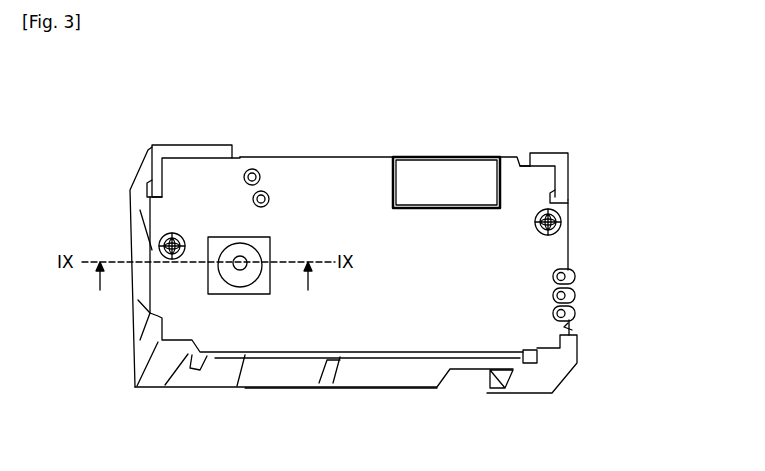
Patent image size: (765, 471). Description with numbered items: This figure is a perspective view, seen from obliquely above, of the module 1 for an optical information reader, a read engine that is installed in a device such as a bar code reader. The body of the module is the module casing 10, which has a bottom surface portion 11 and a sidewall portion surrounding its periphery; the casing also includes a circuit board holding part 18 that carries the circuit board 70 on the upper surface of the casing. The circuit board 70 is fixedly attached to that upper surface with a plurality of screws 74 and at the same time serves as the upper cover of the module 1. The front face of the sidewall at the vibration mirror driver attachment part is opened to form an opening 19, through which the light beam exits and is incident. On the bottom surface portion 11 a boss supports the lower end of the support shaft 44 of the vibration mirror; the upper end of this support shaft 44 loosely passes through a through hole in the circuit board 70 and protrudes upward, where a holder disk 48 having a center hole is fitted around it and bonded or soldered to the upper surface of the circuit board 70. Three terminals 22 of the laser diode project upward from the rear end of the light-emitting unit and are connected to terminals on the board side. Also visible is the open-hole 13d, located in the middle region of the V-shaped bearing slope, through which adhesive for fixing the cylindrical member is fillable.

The module for the optical information reader 1 is at (520, 124).
The module casing 10 is at (382, 387).
The bottom surface portion 11 is at (268, 387).
The open-hole 13d is at (463, 388).
The circuit board holding part 18 is at (195, 147).
The opening 19 is at (318, 387).
The terminals 22 is at (577, 313).
The support shaft 44 is at (243, 293).
The holder disk 48 is at (232, 240).
The circuit board 70 is at (336, 172).
The screws 74 is at (153, 240).